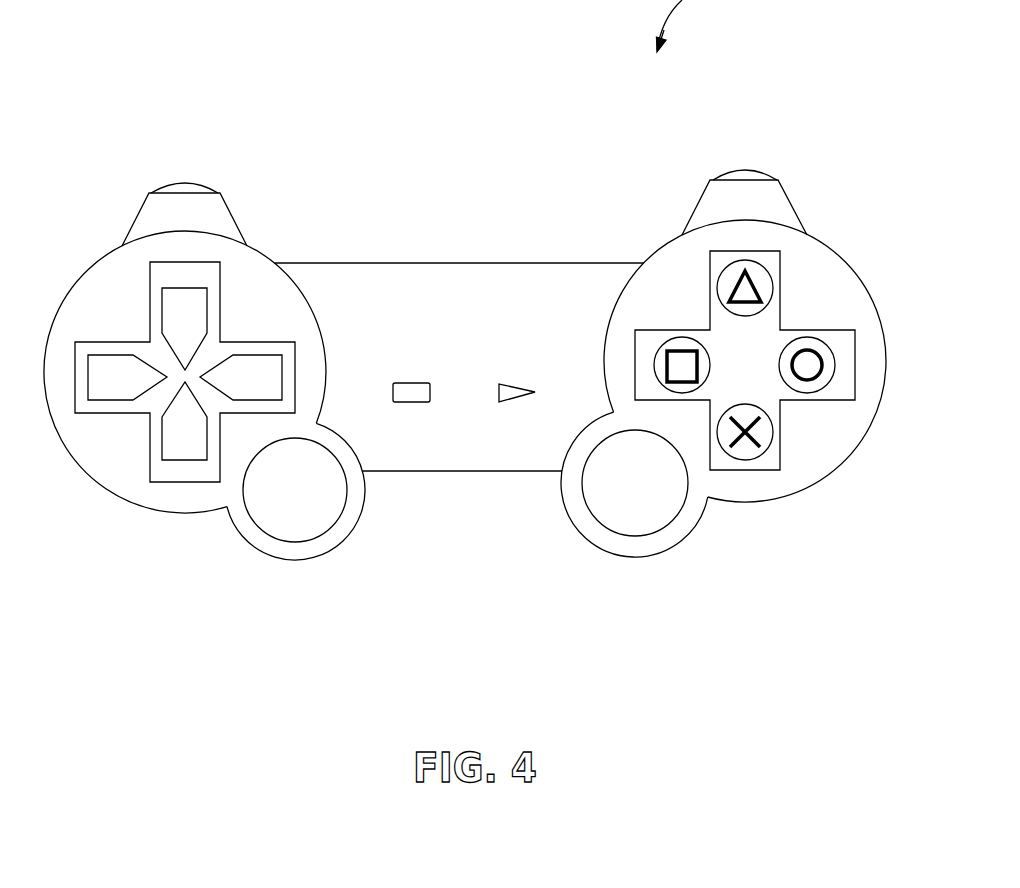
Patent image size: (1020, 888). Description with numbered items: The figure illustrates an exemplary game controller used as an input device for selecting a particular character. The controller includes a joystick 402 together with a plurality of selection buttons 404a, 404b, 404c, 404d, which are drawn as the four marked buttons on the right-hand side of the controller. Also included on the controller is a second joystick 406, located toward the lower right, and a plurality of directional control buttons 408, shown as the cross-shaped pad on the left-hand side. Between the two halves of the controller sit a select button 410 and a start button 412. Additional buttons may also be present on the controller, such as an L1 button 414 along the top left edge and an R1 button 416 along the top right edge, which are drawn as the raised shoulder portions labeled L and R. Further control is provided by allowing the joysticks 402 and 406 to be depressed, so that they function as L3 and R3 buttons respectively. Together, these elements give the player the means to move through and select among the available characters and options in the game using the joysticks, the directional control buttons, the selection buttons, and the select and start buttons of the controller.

The joystick 402 is at (294, 529).
The selection button 404a is at (778, 256).
The selection button 404b is at (665, 321).
The selection button 404c is at (746, 474).
The selection button 404d is at (822, 406).
The second joystick 406 is at (646, 527).
The directional control buttons 408 is at (140, 444).
The select button 410 is at (412, 417).
The start button 412 is at (513, 421).
The L1 button 414 is at (202, 166).
The R1 button 416 is at (780, 162).